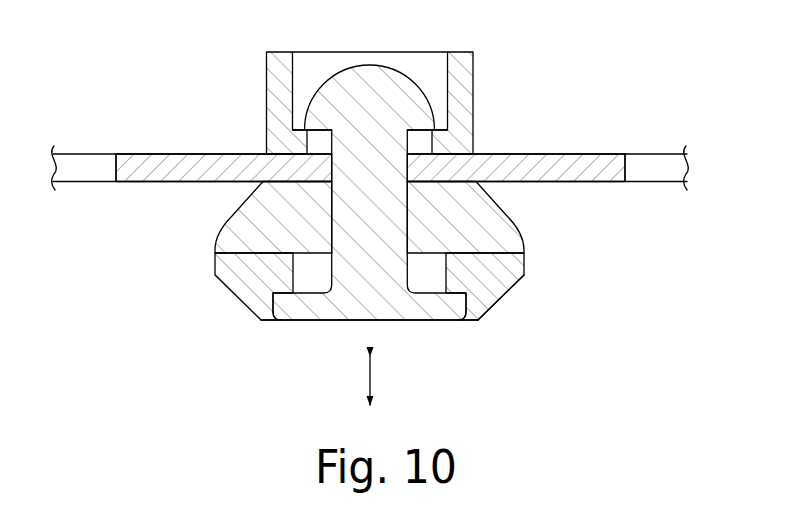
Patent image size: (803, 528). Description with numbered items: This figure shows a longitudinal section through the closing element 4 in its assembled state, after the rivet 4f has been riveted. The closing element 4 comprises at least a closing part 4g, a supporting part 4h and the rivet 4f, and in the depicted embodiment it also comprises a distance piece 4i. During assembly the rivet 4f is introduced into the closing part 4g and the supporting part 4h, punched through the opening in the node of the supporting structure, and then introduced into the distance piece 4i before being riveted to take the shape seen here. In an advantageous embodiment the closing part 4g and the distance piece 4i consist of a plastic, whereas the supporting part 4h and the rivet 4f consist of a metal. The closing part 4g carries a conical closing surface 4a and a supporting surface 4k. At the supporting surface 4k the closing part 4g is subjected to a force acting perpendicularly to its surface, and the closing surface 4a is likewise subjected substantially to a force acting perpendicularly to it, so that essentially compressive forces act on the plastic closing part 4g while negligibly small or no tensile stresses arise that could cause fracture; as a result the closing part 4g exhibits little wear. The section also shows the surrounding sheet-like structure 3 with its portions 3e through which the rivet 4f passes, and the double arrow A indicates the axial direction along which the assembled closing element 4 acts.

The plate / panel 3 is at (586, 167).
The plate end portions 3e is at (76, 163).
The closing element 4 is at (507, 103).
The closing surface 4a is at (500, 312).
The rivet 4f is at (352, 288).
The closing part 4g is at (495, 283).
The supporting part 4h is at (262, 222).
The distance piece 4i is at (278, 72).
The supporting surface 4k is at (243, 250).
The axial direction A is at (372, 377).